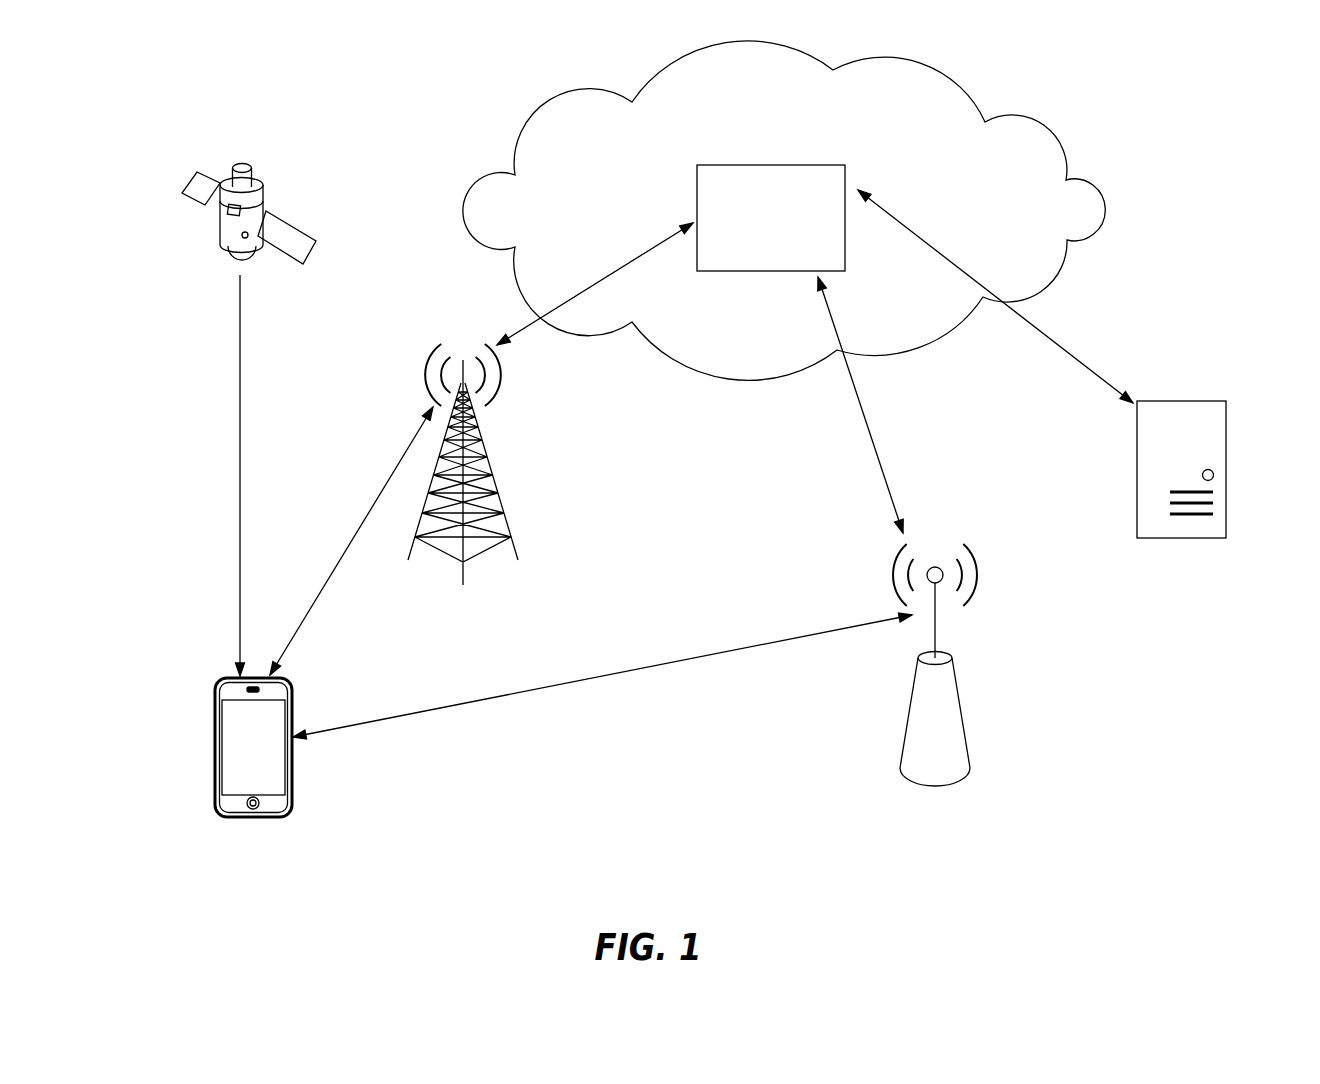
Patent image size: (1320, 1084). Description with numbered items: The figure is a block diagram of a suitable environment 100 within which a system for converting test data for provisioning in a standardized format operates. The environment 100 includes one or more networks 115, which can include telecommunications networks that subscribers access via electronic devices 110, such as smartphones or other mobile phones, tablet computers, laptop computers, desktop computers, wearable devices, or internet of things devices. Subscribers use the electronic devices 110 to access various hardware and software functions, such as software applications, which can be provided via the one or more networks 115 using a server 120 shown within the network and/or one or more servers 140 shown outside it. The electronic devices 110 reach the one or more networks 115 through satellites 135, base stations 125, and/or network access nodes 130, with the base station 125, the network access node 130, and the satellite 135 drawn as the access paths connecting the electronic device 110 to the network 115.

The environment 100 is at (1198, 113).
The electronic device 110 is at (256, 782).
The network 115 is at (774, 148).
The server 120 is at (771, 218).
The base station 125 is at (477, 490).
The network access node 130 is at (941, 694).
The satellite 135 is at (217, 228).
The server 140 is at (1184, 503).